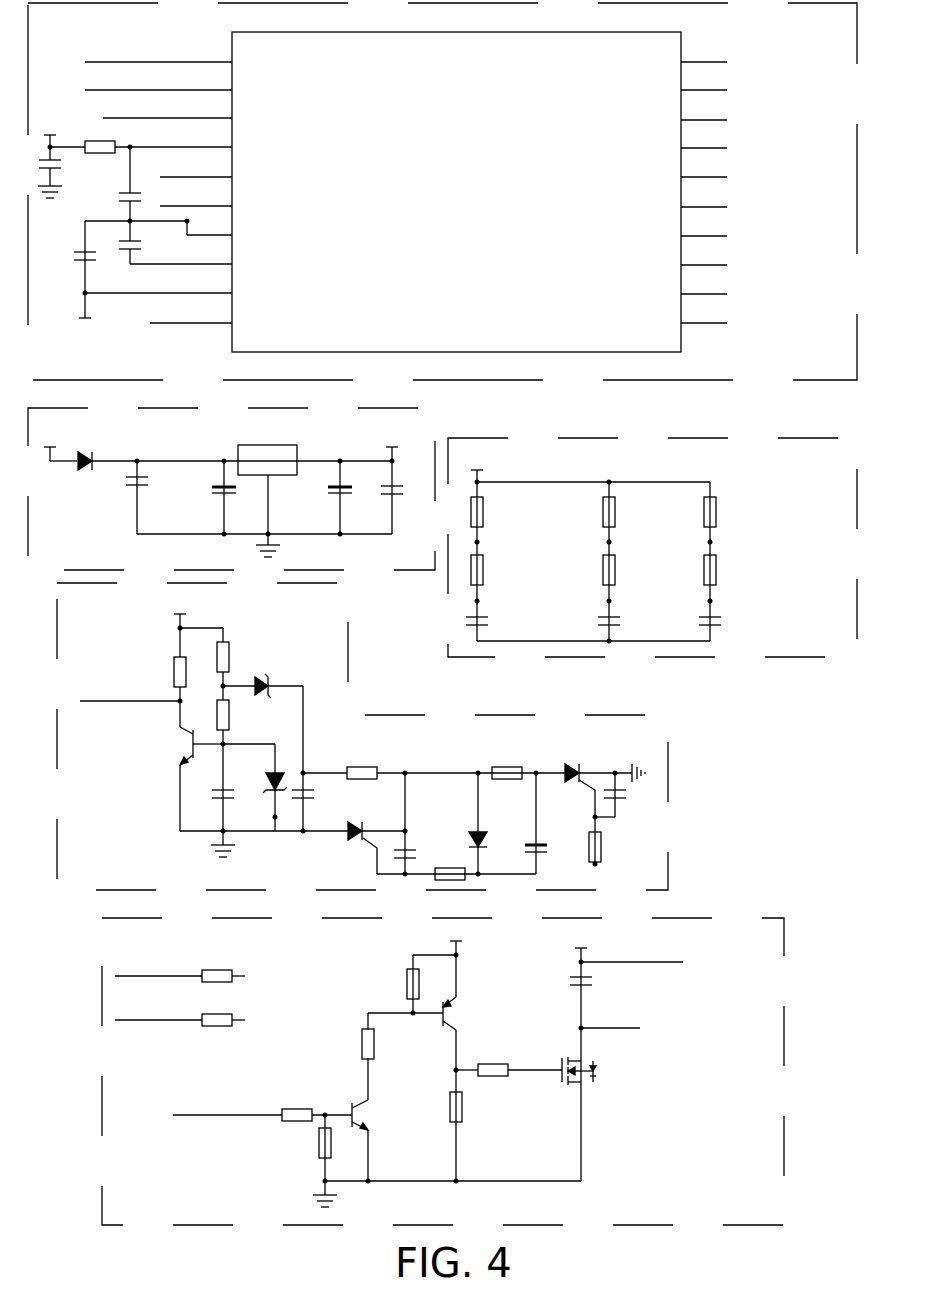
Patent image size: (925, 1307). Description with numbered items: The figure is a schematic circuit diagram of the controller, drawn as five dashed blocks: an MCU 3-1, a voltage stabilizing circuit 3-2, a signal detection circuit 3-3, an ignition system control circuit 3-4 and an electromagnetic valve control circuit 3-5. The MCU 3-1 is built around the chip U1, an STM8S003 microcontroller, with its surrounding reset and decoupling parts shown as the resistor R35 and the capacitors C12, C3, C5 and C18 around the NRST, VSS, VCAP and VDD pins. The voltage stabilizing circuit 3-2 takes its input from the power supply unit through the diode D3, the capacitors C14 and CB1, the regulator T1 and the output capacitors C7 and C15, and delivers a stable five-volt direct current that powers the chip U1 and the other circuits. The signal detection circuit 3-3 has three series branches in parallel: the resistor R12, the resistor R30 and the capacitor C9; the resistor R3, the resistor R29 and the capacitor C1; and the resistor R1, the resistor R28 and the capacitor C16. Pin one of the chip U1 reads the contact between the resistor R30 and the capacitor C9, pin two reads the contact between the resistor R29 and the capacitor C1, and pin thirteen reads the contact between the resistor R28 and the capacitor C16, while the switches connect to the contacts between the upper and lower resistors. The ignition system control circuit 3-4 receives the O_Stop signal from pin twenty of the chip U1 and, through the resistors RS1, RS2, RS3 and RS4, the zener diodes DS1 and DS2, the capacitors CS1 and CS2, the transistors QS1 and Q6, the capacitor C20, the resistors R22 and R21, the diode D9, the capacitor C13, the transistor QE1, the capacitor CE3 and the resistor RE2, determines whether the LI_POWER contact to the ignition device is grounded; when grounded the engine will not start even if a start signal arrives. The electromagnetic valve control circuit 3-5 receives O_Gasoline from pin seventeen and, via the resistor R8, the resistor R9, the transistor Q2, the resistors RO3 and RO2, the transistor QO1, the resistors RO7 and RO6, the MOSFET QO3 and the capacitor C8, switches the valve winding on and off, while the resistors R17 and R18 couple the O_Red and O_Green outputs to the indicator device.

The MCU 3-1 is at (442, 191).
The voltage stabilizing circuit 3-2 is at (231, 489).
The signal detection circuit 3-3 is at (652, 547).
The ignition system control circuit 3-4 is at (362, 736).
The electromagnetic valve control circuit 3-5 is at (443, 1071).
The MCU U1 is at (406, 180).
The resistor R35 is at (101, 137).
The capacitor C12 is at (66, 166).
The capacitor C3 is at (140, 197).
The capacitor C5 is at (140, 244).
The capacitor C18 is at (67, 264).
The diode D3 is at (83, 449).
The capacitor C14 is at (153, 483).
The electrolytic capacitor CB1 is at (204, 492).
The voltage regulator T1 is at (267, 462).
The electrolytic capacitor C7 is at (329, 487).
The capacitor C15 is at (405, 479).
The resistor R1 is at (488, 509).
The resistor R3 is at (620, 509).
The resistor R12 is at (726, 509).
The resistor R28 is at (497, 570).
The resistor R29 is at (629, 570).
The resistor R30 is at (730, 570).
The capacitor C16 is at (495, 616).
The capacitor C1 is at (619, 629).
The capacitor C9 is at (721, 629).
The resistor RS1 is at (157, 670).
The resistor RS2 is at (239, 656).
The resistor RS3 is at (239, 713).
The resistor RS4 is at (363, 763).
The zener diode DS1 is at (283, 673).
The zener diode DS2 is at (278, 759).
The capacitor CS1 is at (238, 803).
The capacitor CS2 is at (318, 792).
The transistor QS1 is at (154, 785).
The transistor Q6 is at (356, 848).
The capacitor C20 is at (423, 832).
The resistor R22 is at (450, 864).
The diode D9 is at (491, 841).
The resistor R21 is at (506, 763).
The electrolytic capacitor C13 is at (552, 848).
The transistor QE1 is at (577, 772).
The capacitor CE3 is at (628, 802).
The resistor RE2 is at (615, 846).
The resistor R17 is at (217, 966).
The resistor R18 is at (217, 1010).
The resistor R8 is at (297, 1105).
The resistor R9 is at (336, 1143).
The transistor Q2 is at (380, 1115).
The resistor RO3 is at (387, 1044).
The resistor RO2 is at (430, 983).
The transistor QO1 is at (470, 1013).
The resistor RO7 is at (495, 1060).
The resistor RO6 is at (474, 1104).
The MOSFET QO3 is at (598, 1068).
The capacitor C8 is at (590, 980).